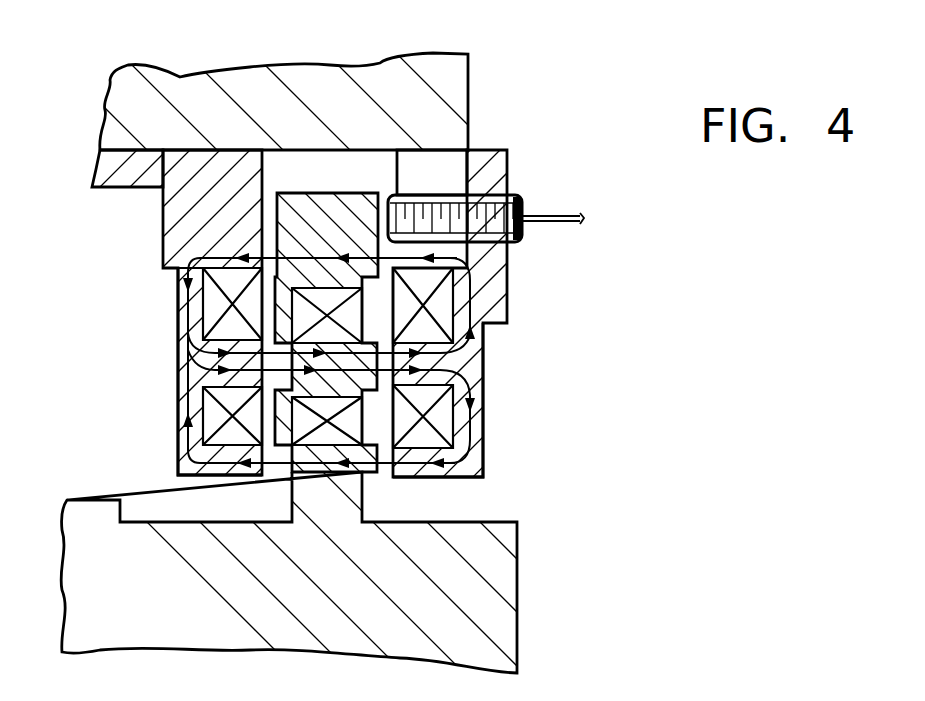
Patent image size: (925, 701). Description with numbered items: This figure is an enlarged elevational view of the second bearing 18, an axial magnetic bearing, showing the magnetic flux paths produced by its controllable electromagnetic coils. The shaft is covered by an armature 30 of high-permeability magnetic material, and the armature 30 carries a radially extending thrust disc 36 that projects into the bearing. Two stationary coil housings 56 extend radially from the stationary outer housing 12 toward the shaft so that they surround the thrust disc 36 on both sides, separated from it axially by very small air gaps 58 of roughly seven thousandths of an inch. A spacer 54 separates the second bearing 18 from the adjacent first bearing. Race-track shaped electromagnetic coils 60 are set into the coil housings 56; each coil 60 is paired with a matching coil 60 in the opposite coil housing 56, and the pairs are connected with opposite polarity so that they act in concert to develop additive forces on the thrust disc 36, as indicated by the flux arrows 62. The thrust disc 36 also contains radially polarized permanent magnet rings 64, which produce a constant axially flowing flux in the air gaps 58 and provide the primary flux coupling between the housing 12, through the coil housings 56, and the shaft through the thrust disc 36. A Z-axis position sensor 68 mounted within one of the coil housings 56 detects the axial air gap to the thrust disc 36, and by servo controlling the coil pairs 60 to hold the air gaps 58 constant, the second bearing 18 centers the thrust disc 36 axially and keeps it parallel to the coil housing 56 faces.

The stationary outer housing 12 is at (470, 72).
The second bearing 18 is at (525, 127).
The armature 30 is at (517, 585).
The thrust disc 36 is at (316, 192).
The spacer 54 is at (115, 190).
The coil housings 56 is at (507, 168).
The air gaps 58 is at (267, 472).
The electromagnetic coils 60 is at (207, 323).
The flux arrows 62 is at (180, 282).
The permanent magnet rings 64 is at (324, 295).
The Z-axis position sensors 68 is at (518, 240).